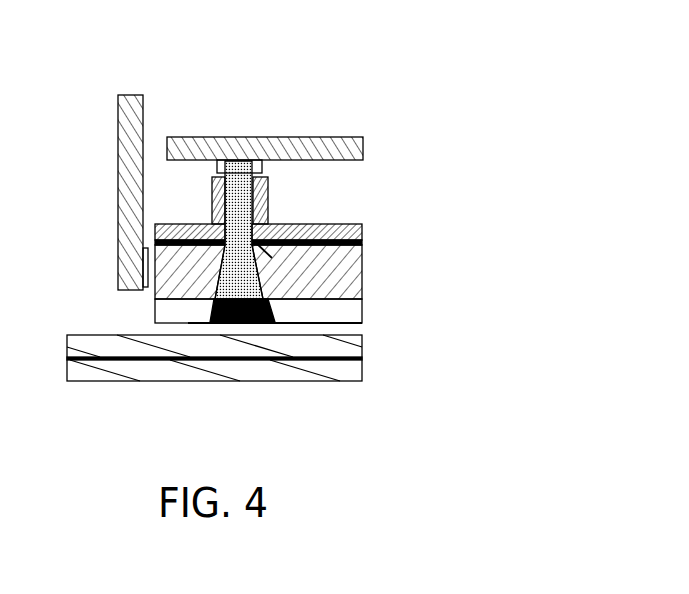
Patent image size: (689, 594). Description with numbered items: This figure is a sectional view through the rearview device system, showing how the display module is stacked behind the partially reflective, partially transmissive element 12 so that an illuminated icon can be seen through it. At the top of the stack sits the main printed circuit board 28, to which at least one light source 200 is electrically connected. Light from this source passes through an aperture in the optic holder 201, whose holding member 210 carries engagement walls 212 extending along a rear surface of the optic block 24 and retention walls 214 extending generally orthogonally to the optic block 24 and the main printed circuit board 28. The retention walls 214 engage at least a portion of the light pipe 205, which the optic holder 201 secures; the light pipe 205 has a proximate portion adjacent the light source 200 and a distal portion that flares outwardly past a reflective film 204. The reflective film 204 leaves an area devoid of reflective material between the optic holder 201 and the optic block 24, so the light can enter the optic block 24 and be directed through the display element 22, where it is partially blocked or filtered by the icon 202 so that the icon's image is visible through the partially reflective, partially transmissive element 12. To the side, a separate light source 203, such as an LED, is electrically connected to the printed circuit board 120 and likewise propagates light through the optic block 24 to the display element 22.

The partially reflective, partially transmissive element 12 is at (193, 337).
The display element 22 is at (362, 317).
The optic block 24 is at (307, 270).
The primary printed circuit board 28 is at (273, 121).
The printed circuit board 120 is at (85, 188).
The light source 200 is at (238, 158).
The optic holder 201 is at (322, 222).
The icon 202 is at (188, 323).
The light source 203 is at (93, 257).
The reflective film 204 is at (260, 243).
The light pipe 205 is at (238, 218).
The holding member 210 is at (253, 243).
The engagement walls 212 is at (363, 240).
The retention walls 214 is at (259, 185).